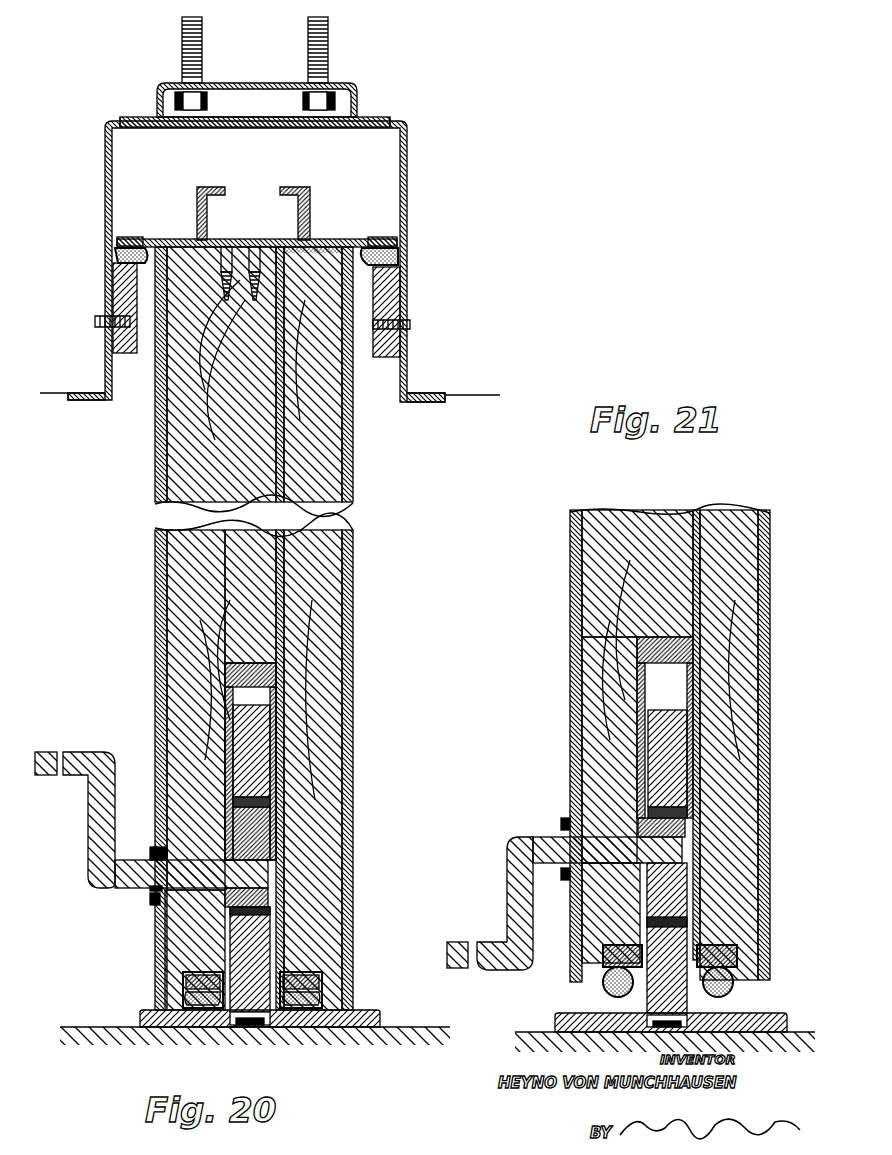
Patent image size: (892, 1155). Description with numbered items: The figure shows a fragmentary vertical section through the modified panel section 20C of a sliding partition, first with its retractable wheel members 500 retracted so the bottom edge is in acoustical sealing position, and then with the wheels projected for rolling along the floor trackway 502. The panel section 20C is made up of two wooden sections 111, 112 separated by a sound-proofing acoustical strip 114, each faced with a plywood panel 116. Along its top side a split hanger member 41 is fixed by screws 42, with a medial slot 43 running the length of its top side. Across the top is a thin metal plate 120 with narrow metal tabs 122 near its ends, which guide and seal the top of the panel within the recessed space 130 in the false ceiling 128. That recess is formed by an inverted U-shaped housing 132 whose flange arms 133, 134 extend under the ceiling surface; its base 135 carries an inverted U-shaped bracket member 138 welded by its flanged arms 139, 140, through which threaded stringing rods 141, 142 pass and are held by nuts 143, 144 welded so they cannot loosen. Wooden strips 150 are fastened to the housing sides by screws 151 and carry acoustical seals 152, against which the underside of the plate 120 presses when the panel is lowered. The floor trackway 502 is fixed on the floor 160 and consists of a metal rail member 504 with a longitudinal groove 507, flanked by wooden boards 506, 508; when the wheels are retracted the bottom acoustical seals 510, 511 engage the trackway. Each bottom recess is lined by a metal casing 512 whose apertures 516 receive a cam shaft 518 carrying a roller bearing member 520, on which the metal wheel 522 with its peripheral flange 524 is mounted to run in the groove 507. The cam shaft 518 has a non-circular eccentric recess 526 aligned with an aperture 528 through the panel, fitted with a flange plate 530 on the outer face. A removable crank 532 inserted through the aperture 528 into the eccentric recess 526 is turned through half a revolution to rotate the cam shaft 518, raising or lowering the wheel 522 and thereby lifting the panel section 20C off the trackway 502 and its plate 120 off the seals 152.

In FIG. 20, the panel section 20C is at (356, 604).
In FIG. 21, the panel section 20C is at (570, 589).
In FIG. 20, the split hanger member 41 is at (311, 208).
In FIG. 20, the screws 42 is at (250, 246).
In FIG. 20, the medial slot 43 is at (254, 190).
In FIG. 20, the wooden section 111 is at (186, 512).
In FIG. 21, the wooden section 111 is at (631, 516).
In FIG. 20, the wooden section 112 is at (346, 512).
In FIG. 21, the wooden section 112 is at (728, 516).
In FIG. 20, the acoustical strip 114 is at (279, 514).
In FIG. 21, the acoustical strip 114 is at (697, 514).
In FIG. 20, the plywood panel 116 is at (160, 466).
In FIG. 21, the plywood panel 116 is at (575, 531).
In FIG. 20, the metal plate 120 is at (321, 239).
In FIG. 20, the metal tabs 122 is at (128, 237).
In FIG. 20, the false ceiling 128 is at (450, 395).
In FIG. 20, the recessed space 130 is at (138, 385).
In FIG. 20, the inverted U-shaped housing 132 is at (112, 163).
In FIG. 20, the flange arm 133 is at (86, 401).
In FIG. 20, the flange arm 134 is at (425, 402).
In FIG. 20, the base 135 is at (243, 128).
In FIG. 20, the inverted U-shaped bracket member 138 is at (243, 83).
In FIG. 20, the flanged arm 139 is at (131, 117).
In FIG. 20, the flanged arm 140 is at (371, 117).
In FIG. 20, the stringing rod 141 is at (202, 46).
In FIG. 20, the stringing rod 142 is at (328, 46).
In FIG. 20, the nut 143 is at (207, 101).
In FIG. 20, the nut 144 is at (303, 101).
In FIG. 20, the wooden strips 150 is at (120, 292).
In FIG. 20, the screws 151 is at (95, 321).
In FIG. 20, the acoustical seals 152 is at (115, 255).
In FIG. 20, the floor 160 is at (140, 1018).
In FIG. 20, the retractable wheel members 500 is at (195, 670).
In FIG. 20, the floor trackway 502 is at (380, 1020).
In FIG. 21, the floor trackway 502 is at (553, 1022).
In FIG. 20, the metal rail member 504 is at (270, 1030).
In FIG. 21, the metal rail member 504 is at (665, 1042).
In FIG. 20, the wooden board 506 is at (176, 1020).
In FIG. 21, the wooden board 506 is at (592, 1032).
In FIG. 20, the groove 507 is at (246, 1028).
In FIG. 21, the groove 507 is at (668, 1032).
In FIG. 20, the wooden board 508 is at (346, 1012).
In FIG. 21, the wooden board 508 is at (762, 1018).
In FIG. 20, the bottom acoustical seal 510 is at (185, 987).
In FIG. 21, the bottom acoustical seal 510 is at (603, 986).
In FIG. 20, the bottom acoustical seal 511 is at (322, 992).
In FIG. 21, the bottom acoustical seal 511 is at (733, 988).
In FIG. 20, the metal casing 512 is at (228, 700).
In FIG. 21, the metal casing 512 is at (640, 737).
In FIG. 20, the apertures 516 is at (158, 849).
In FIG. 20, the cam shaft 518 is at (260, 832).
In FIG. 21, the cam shaft 518 is at (670, 880).
In FIG. 20, the roller bearing member 520 is at (258, 801).
In FIG. 21, the roller bearing member 520 is at (662, 806).
In FIG. 20, the metal wheel 522 is at (255, 716).
In FIG. 21, the metal wheel 522 is at (680, 744).
In FIG. 20, the peripheral flange 524 is at (242, 676).
In FIG. 21, the peripheral flange 524 is at (672, 708).
In FIG. 20, the eccentric recess 526 is at (200, 880).
In FIG. 21, the eccentric recess 526 is at (686, 853).
In FIG. 20, the aperture 528 is at (160, 888).
In FIG. 21, the aperture 528 is at (592, 840).
In FIG. 20, the flange plate 530 is at (152, 900).
In FIG. 21, the flange plate 530 is at (566, 818).
In FIG. 20, the crank 532 is at (100, 820).
In FIG. 21, the crank 532 is at (507, 883).